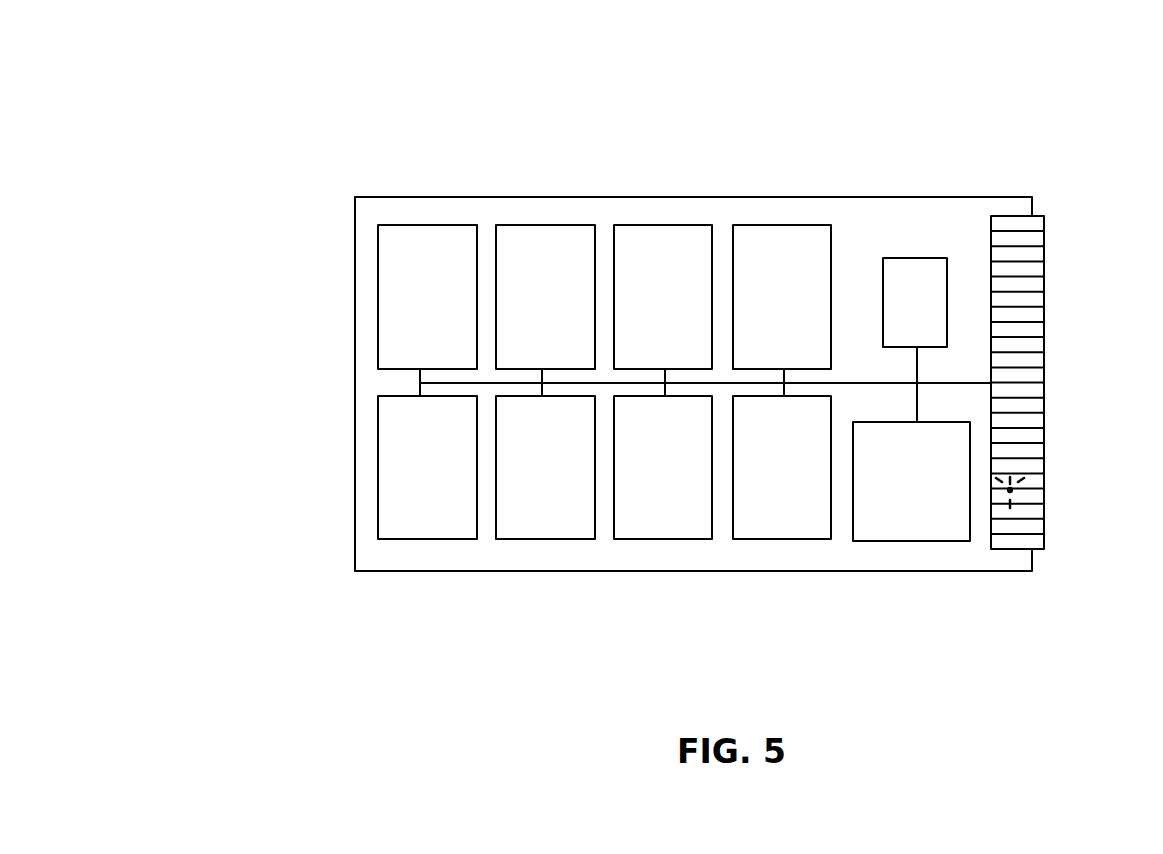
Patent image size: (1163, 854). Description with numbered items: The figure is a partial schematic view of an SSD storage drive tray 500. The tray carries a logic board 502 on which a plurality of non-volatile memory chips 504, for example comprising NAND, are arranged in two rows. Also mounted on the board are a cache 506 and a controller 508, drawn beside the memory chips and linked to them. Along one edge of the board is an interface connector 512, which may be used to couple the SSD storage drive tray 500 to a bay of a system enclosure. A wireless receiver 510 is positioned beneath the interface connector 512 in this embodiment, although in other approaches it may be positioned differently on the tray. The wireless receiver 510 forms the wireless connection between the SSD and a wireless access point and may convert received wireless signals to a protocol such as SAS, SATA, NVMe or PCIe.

The SSD storage drive tray 500 is at (280, 93).
The logic board 502 is at (347, 337).
The non-volatile memory chips 504 is at (427, 225).
The cache 506 is at (909, 258).
The controller 508 is at (892, 542).
The wireless receiver 510 is at (1012, 492).
The interface connector 512 is at (1044, 276).